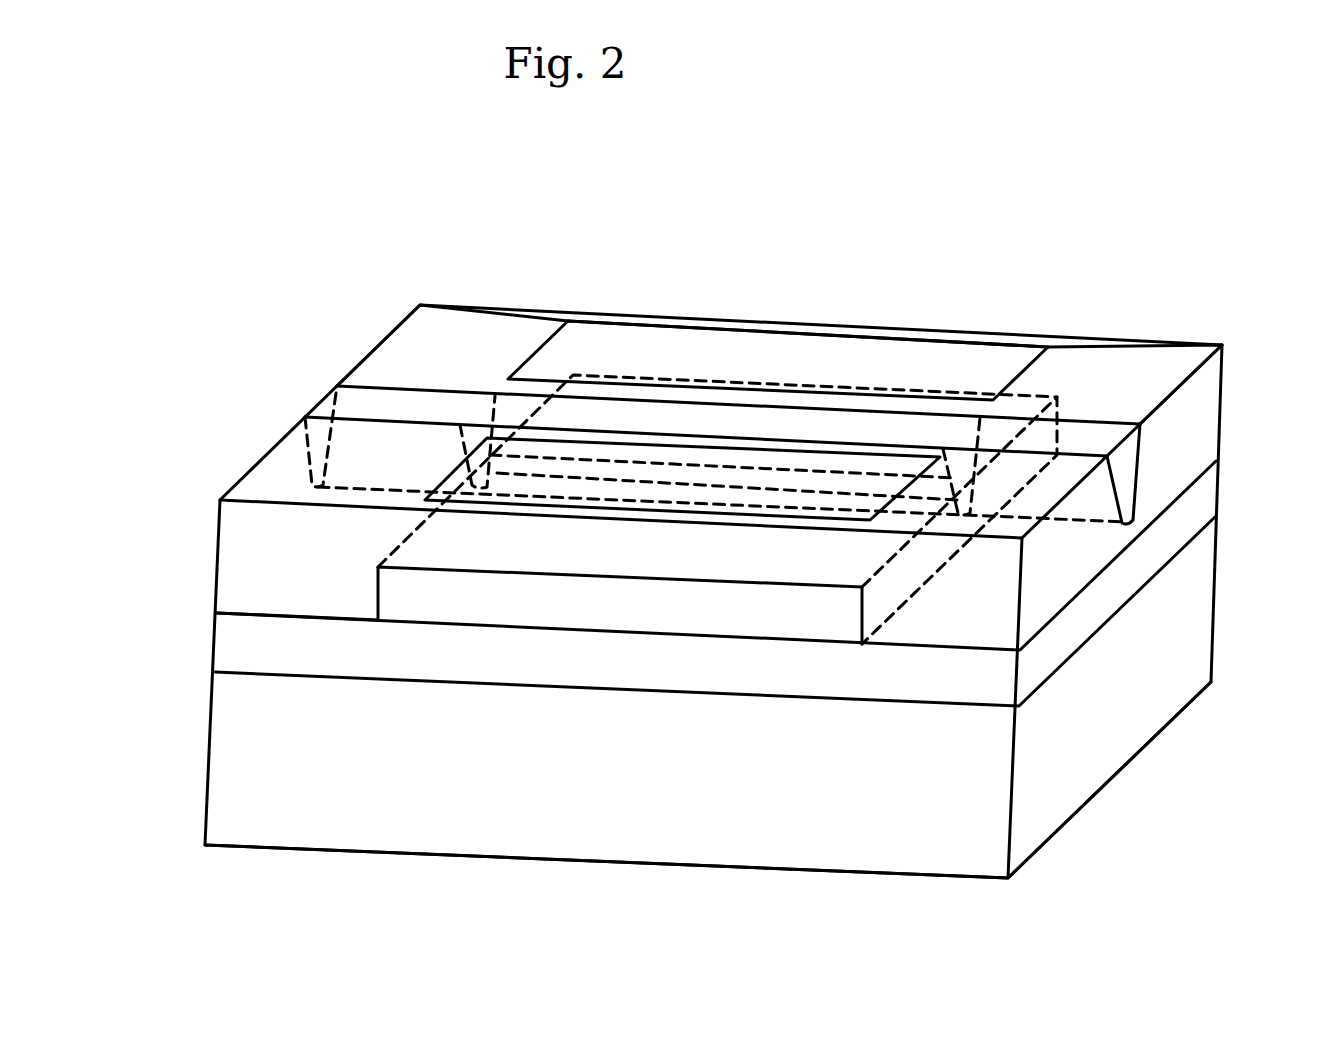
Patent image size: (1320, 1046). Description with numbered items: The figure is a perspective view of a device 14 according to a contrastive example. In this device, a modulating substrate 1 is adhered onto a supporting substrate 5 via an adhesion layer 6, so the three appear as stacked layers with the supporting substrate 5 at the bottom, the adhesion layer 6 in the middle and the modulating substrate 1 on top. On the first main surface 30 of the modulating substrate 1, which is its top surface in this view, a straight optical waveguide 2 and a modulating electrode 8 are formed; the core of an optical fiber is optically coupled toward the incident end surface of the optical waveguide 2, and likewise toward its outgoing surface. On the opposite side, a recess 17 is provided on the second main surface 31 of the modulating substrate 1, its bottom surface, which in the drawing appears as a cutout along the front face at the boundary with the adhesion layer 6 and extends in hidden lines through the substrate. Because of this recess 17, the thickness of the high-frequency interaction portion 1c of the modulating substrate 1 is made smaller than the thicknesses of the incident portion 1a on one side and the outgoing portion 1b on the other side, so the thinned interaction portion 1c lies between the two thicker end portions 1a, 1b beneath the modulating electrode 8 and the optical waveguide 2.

The modulating substrate 1 is at (232, 570).
The incident portion 1a is at (1143, 352).
The outgoing portion 1b is at (462, 322).
The high-frequency interaction portion 1c is at (1075, 322).
The optical waveguide 2 is at (385, 400).
The supporting substrate 5 is at (232, 757).
The adhesion layer 6 is at (232, 645).
The modulating electrode 8 is at (1005, 357).
The device 14 is at (1254, 326).
The recess 17 is at (718, 613).
The first main surface 30 is at (285, 478).
The second main surface 31 is at (320, 620).